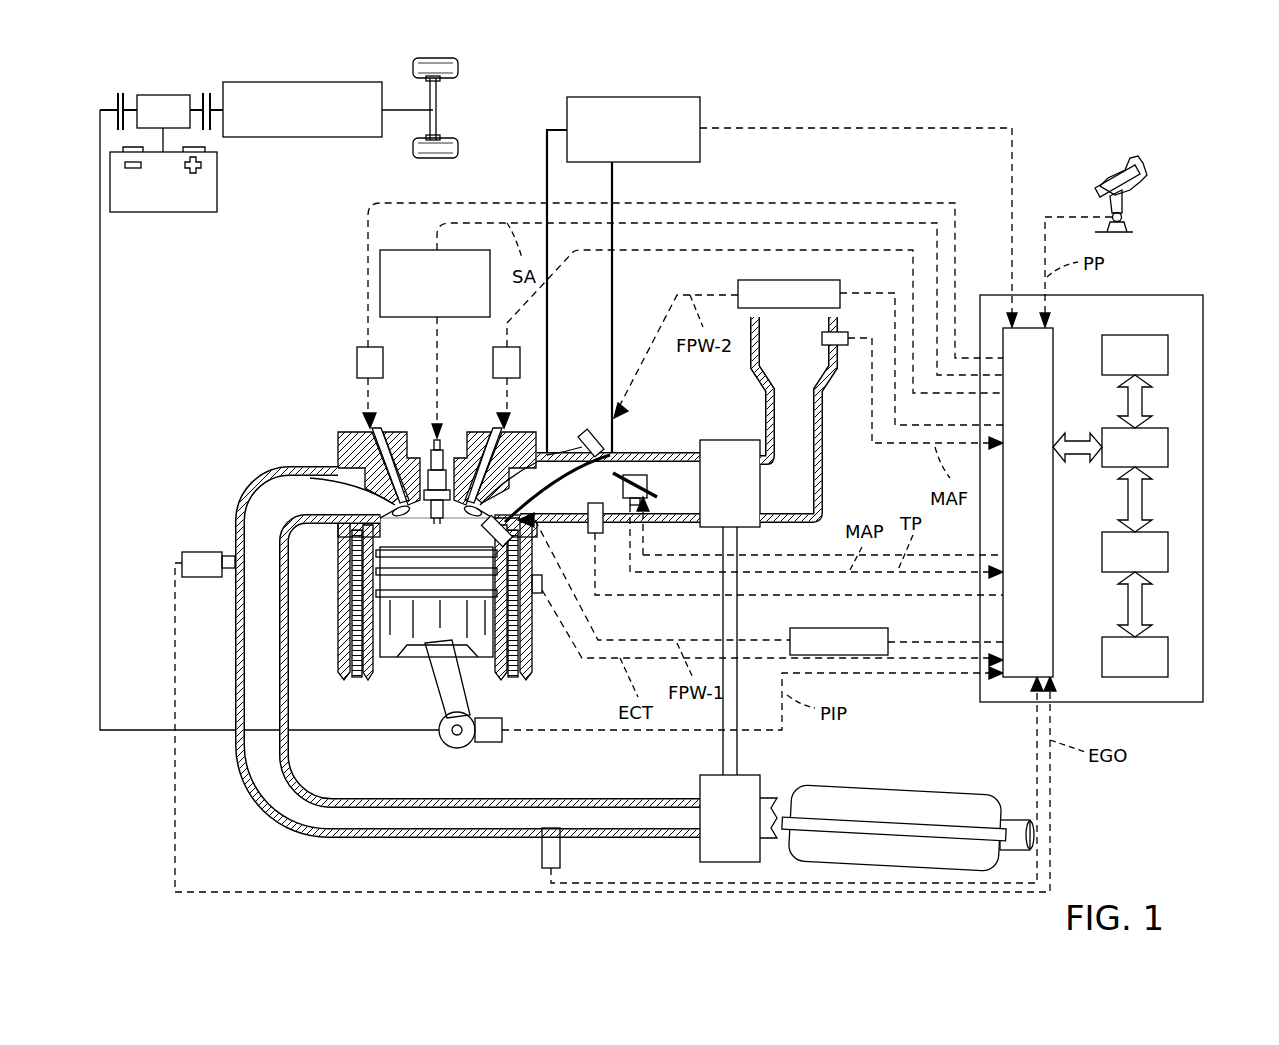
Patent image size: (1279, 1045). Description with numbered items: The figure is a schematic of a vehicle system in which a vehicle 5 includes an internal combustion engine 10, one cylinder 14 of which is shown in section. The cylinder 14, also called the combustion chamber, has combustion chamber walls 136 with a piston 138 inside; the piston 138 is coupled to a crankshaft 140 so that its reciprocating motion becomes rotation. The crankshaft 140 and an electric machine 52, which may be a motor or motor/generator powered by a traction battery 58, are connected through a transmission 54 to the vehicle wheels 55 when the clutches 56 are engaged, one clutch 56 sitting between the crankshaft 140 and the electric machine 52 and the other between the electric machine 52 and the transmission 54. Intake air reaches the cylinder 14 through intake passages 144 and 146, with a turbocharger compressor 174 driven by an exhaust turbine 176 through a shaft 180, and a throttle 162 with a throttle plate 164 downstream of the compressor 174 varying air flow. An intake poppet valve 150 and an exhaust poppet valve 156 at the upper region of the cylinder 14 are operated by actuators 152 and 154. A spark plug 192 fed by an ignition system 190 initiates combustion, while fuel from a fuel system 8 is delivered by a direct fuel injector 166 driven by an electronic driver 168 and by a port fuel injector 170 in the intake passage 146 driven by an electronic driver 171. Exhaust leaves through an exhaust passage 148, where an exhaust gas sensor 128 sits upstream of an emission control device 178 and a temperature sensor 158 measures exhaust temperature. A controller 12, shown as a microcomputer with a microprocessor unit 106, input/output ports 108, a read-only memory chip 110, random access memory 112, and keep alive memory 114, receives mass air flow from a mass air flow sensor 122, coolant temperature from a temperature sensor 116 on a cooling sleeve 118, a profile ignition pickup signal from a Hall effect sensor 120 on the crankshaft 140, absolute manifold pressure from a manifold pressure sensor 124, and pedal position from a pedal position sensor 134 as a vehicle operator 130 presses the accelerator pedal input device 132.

The vehicle 5 is at (1160, 153).
The fuel system 8 is at (700, 118).
The internal combustion engine 10 is at (292, 435).
The controller 12 is at (1203, 305).
The cylinder 14 is at (403, 532).
The electric machine 52 is at (165, 93).
The transmission 54 is at (297, 137).
The vehicle wheels 55 is at (458, 150).
The clutch 56 is at (117, 102).
The traction battery 58 is at (160, 212).
The microprocessor unit 106 is at (1168, 447).
The input/output ports 108 is at (1053, 342).
The read-only memory chip 110 is at (1168, 352).
The random access memory 112 is at (1168, 552).
The keep alive memory 114 is at (1168, 657).
The temperature sensor 116 is at (537, 595).
The cooling sleeve 118 is at (520, 648).
The Hall effect sensor 120 is at (502, 735).
The mass air flow sensor 122 is at (838, 346).
The MAP sensor 124 is at (814, 359).
The exhaust gas sensor 128 is at (200, 552).
The vehicle operator 130 is at (1147, 183).
The input device 132 is at (1100, 187).
The pedal position sensor 134 is at (1125, 225).
The combustion chamber walls 136 is at (377, 662).
The piston 138 is at (452, 637).
The crankshaft 140 is at (440, 738).
The intake air passage 144 is at (692, 495).
The intake air passage 146 is at (599, 495).
The exhaust passage 148 is at (336, 505).
The intake poppet valve 150 is at (553, 453).
The actuator 152 is at (520, 363).
The actuator 154 is at (357, 360).
The exhaust poppet valve 156 is at (397, 508).
The temperature sensor 158 is at (542, 850).
The throttle 162 is at (643, 452).
The throttle plate 164 is at (625, 458).
The fuel injector 166 is at (600, 458).
The electronic driver 168 is at (888, 633).
The fuel injector 170 is at (587, 433).
The electronic driver 171 is at (738, 290).
The compressor 174 is at (749, 495).
The exhaust turbine 176 is at (749, 830).
The emission control device 178 is at (943, 795).
The shaft 180 is at (737, 745).
The ignition system 190 is at (380, 280).
The spark plug 192 is at (425, 462).